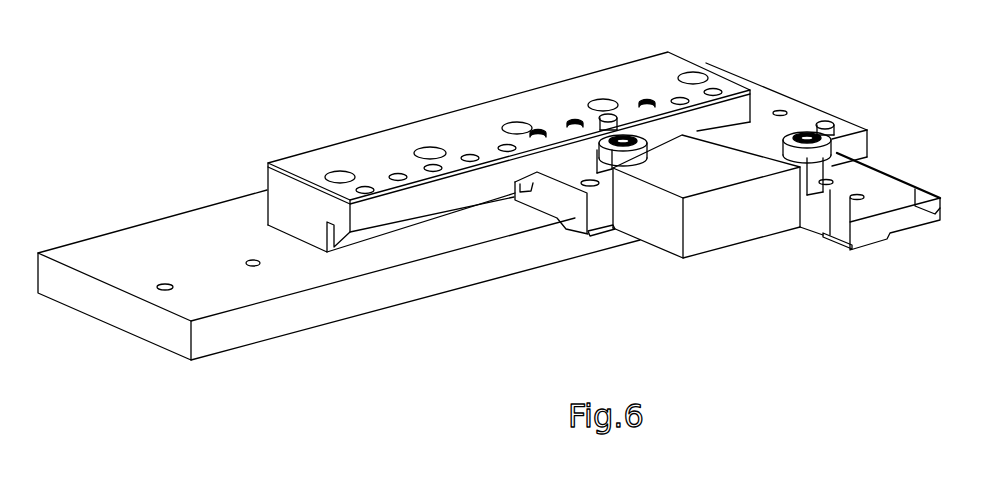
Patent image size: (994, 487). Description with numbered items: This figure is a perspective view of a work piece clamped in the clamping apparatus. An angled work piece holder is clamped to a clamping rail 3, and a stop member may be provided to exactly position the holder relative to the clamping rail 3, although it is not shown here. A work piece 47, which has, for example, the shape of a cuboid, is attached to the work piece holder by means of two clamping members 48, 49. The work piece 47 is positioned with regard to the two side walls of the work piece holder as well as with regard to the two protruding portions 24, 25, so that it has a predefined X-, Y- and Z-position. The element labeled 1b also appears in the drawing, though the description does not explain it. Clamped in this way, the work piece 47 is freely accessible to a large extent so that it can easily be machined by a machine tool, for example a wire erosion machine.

The clamping rail 3 is at (547, 100).
The plate 1b is at (770, 102).
The protruding portion 24 is at (597, 221).
The protruding portion 25 is at (841, 229).
The work piece 47 is at (749, 232).
The clamping member 48 is at (613, 131).
The clamping member 49 is at (807, 134).